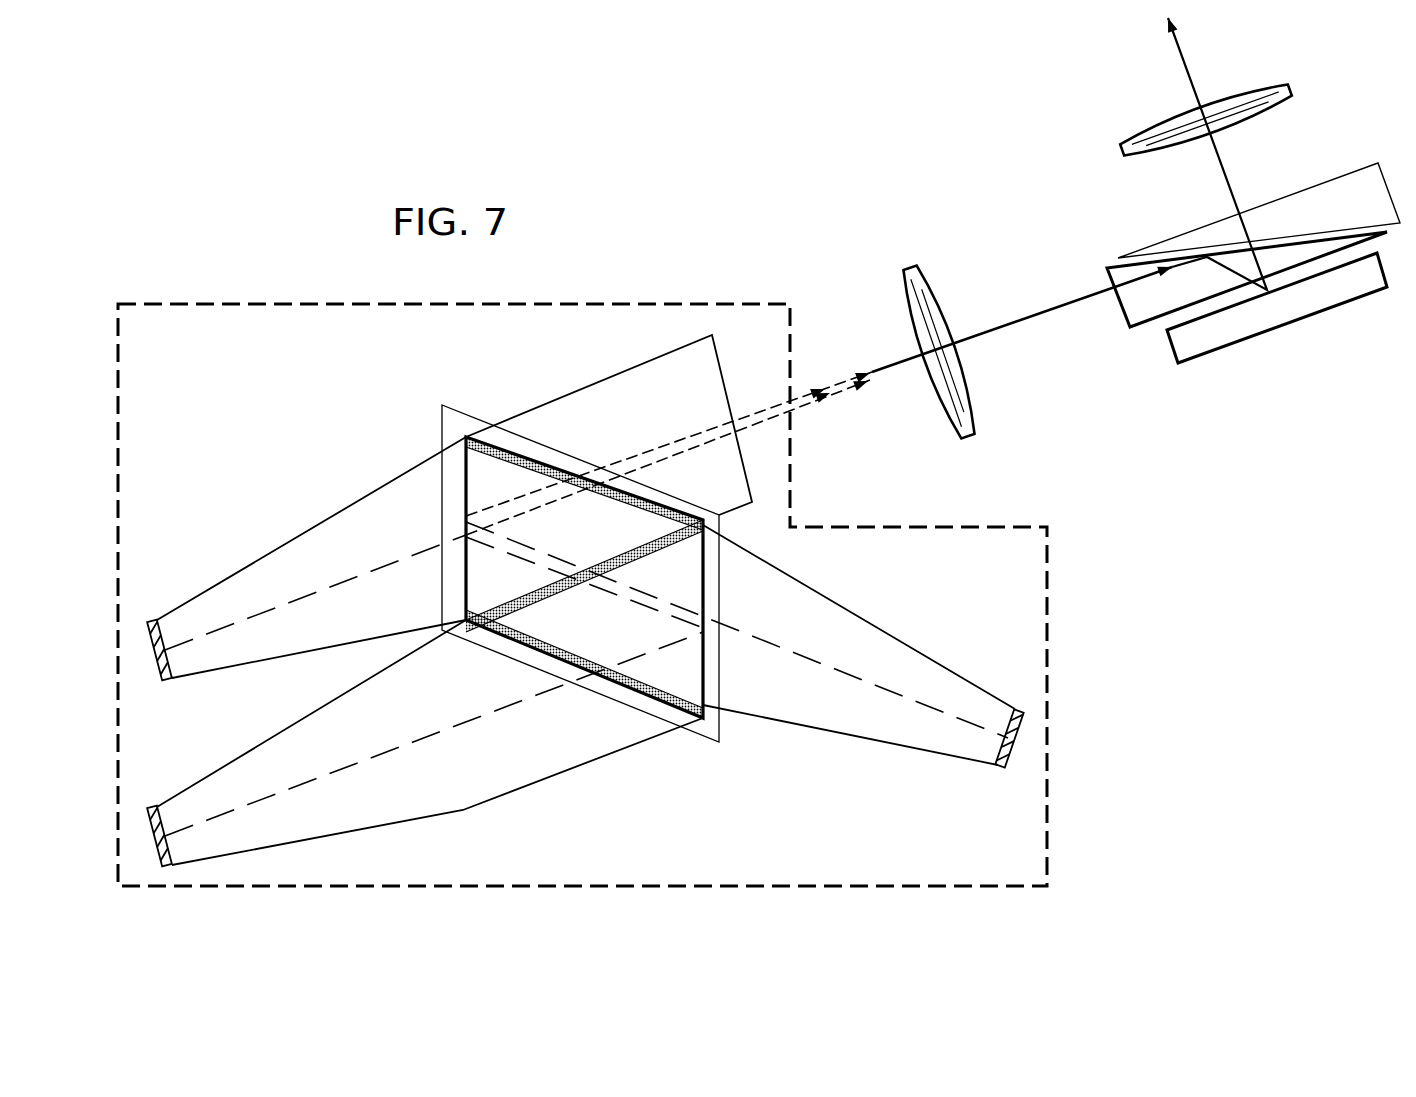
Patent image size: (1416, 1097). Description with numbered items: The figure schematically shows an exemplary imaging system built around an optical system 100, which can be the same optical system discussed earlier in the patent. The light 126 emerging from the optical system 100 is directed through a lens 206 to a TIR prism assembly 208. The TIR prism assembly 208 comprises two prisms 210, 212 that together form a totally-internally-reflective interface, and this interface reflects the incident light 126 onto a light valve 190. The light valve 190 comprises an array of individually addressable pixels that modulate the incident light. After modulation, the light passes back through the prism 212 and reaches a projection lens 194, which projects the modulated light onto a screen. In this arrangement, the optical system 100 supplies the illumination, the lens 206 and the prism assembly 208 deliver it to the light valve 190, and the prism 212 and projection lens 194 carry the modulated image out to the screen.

The optical system 100 is at (308, 420).
The light 126 is at (853, 414).
The light valve 190 is at (1320, 310).
The projection lens 194 is at (1246, 87).
The lens 206 is at (910, 290).
The TIR prism assembly 208 is at (1097, 240).
The prism 210 is at (1117, 310).
The prism 212 is at (1307, 188).